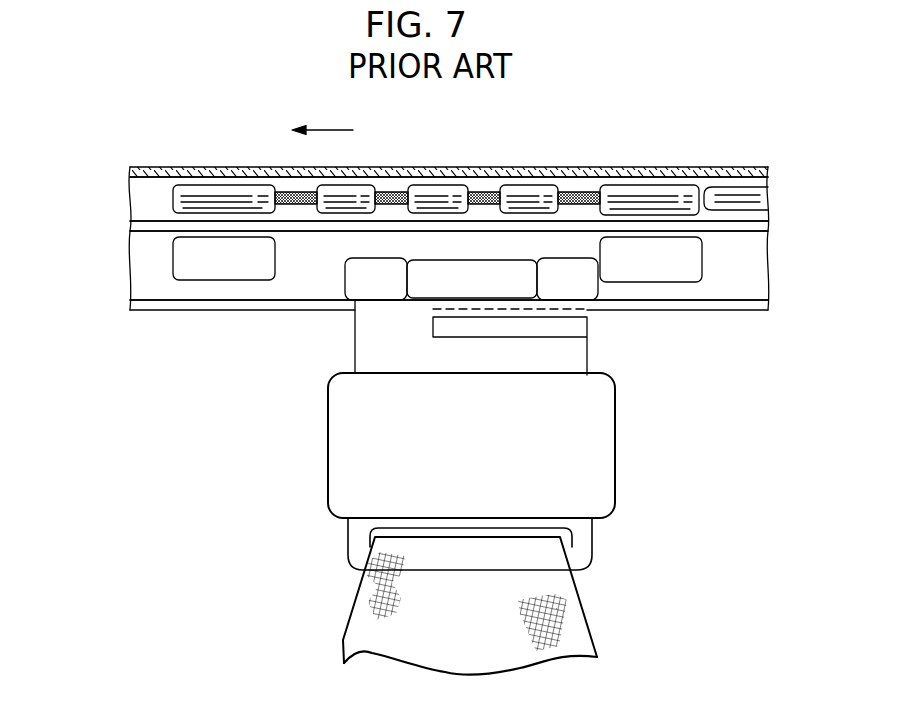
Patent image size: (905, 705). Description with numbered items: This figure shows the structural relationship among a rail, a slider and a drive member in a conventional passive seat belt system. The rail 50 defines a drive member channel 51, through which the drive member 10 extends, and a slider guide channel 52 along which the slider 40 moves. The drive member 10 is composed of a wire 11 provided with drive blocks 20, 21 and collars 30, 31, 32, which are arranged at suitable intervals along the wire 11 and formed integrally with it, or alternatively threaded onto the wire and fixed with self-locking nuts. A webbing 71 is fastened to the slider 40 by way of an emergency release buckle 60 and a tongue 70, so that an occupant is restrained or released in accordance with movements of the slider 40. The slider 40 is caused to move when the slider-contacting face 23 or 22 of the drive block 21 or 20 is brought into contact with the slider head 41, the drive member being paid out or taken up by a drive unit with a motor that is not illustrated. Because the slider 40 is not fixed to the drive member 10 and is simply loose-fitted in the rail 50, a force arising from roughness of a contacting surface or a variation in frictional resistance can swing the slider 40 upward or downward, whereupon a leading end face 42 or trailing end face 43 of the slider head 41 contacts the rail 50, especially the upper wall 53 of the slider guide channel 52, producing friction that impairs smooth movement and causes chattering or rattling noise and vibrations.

The drive member 10 is at (470, 147).
The wire 11 is at (583, 196).
The drive block 20 is at (214, 190).
The drive block 21 is at (636, 190).
The slider-contacting face 22 is at (278, 275).
The slider-contacting face 23 is at (592, 255).
The collar 30 is at (360, 190).
The collar 31 is at (452, 190).
The collar 32 is at (530, 190).
The slider 40 is at (580, 360).
The slider head 41 is at (423, 293).
The leading end face 42 is at (340, 285).
The trailing end face 43 is at (600, 288).
The rail 50 is at (757, 260).
The drive member channel 51 is at (140, 196).
The slider guide channel 52 is at (135, 280).
The upper wall 53 is at (140, 236).
The emergency release buckle 60 is at (352, 458).
The tongue 70 is at (580, 545).
The webbing 71 is at (358, 610).